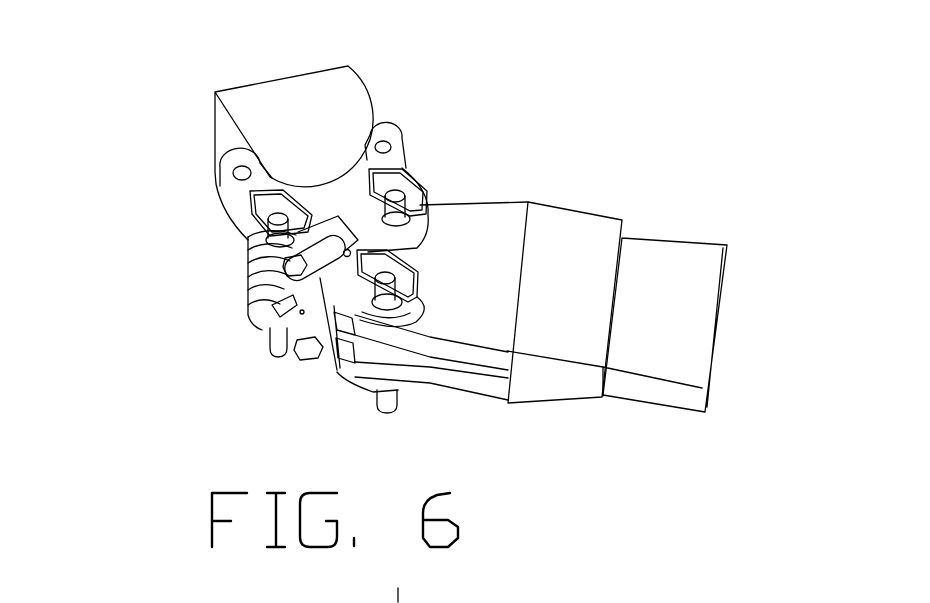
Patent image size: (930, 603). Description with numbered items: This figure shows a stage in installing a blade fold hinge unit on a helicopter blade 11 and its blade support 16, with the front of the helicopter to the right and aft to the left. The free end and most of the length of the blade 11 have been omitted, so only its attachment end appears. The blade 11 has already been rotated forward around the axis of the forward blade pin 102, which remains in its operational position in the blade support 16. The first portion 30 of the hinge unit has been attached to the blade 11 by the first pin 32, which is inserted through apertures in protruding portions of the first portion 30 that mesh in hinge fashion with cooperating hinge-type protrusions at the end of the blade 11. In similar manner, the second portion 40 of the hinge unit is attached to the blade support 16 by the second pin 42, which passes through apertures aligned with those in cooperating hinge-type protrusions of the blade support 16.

The blade support 16 is at (356, 88).
The forward blade pin 102 is at (398, 197).
The blade 11 is at (675, 240).
The second portion 40 is at (303, 290).
The second pin 42 is at (266, 343).
The first portion 30 is at (348, 375).
The first pin 32 is at (398, 412).